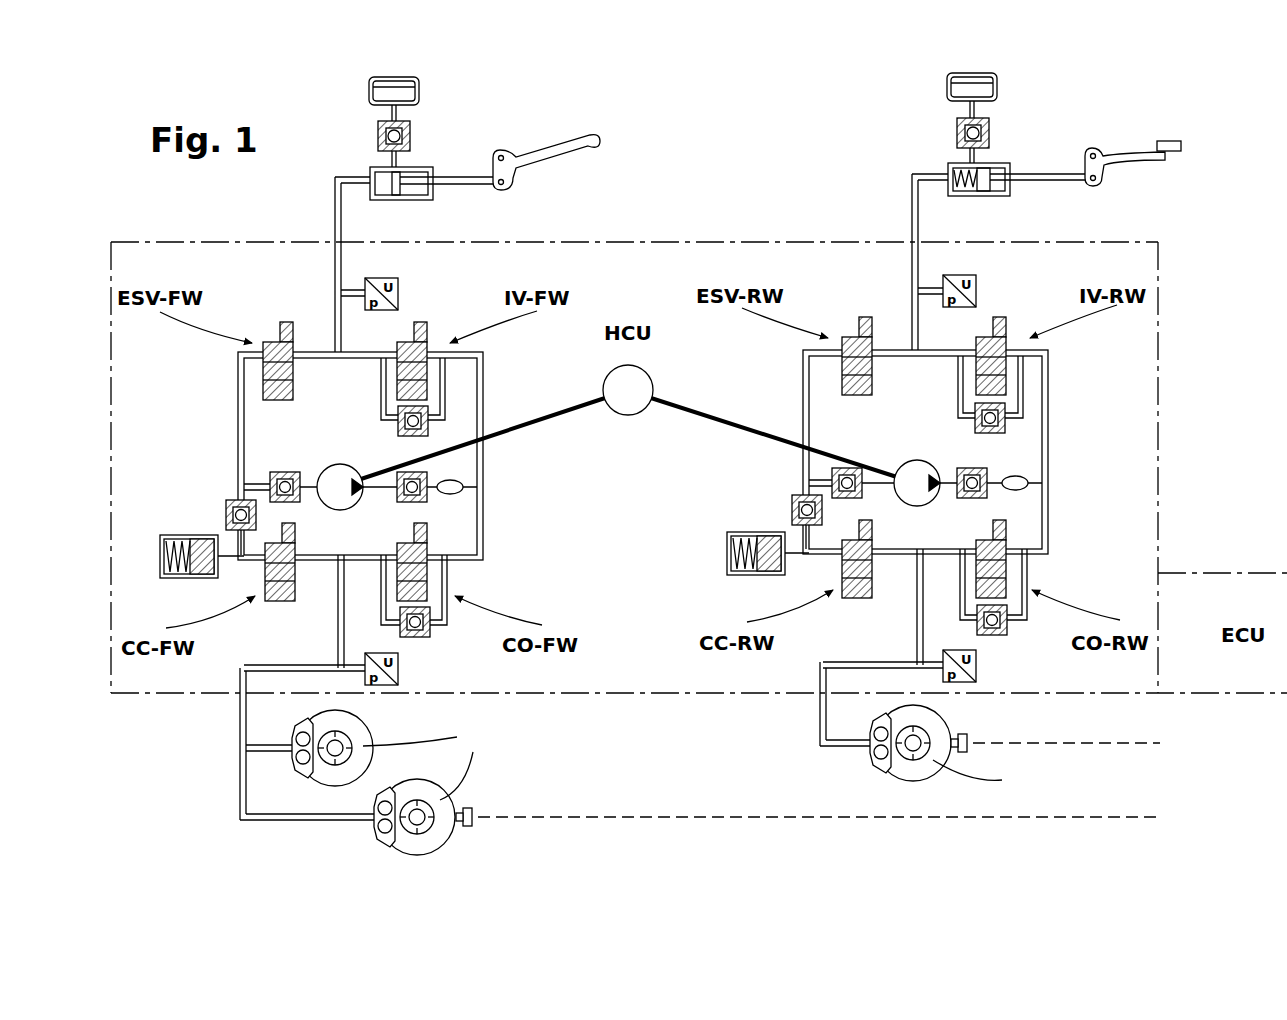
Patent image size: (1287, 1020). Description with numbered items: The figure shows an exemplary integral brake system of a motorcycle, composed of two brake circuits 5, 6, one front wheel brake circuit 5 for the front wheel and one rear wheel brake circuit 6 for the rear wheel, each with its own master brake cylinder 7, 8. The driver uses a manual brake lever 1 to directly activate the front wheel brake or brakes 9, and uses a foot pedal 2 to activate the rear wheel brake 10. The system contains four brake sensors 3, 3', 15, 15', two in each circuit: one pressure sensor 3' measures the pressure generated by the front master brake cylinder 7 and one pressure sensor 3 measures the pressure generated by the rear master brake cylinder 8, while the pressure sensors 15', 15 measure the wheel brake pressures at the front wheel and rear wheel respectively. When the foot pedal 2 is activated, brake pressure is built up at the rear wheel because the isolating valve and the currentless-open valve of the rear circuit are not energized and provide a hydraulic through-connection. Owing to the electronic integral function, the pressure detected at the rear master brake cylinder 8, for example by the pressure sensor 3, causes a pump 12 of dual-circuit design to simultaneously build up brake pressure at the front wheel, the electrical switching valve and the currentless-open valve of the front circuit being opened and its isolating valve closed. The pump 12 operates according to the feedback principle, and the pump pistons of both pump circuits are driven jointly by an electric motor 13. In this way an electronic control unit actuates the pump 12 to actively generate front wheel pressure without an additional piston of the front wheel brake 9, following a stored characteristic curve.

The manual brake lever 1 is at (541, 160).
The foot pedal 2 is at (1121, 159).
The pressure sensor 3 is at (998, 286).
The pressure sensor 3' is at (423, 288).
The front wheel brake circuit 5 is at (333, 214).
The rear wheel brake circuit 6 is at (910, 212).
The master brake cylinder 7 is at (418, 167).
The master brake cylinder 8 is at (998, 163).
The front wheel brake 9 is at (380, 795).
The rear wheel brake 10 is at (880, 767).
The pump 12 is at (340, 468).
The electric motor 13 is at (628, 408).
The pressure sensor 15 is at (1008, 666).
The pressure sensor 15' is at (432, 669).